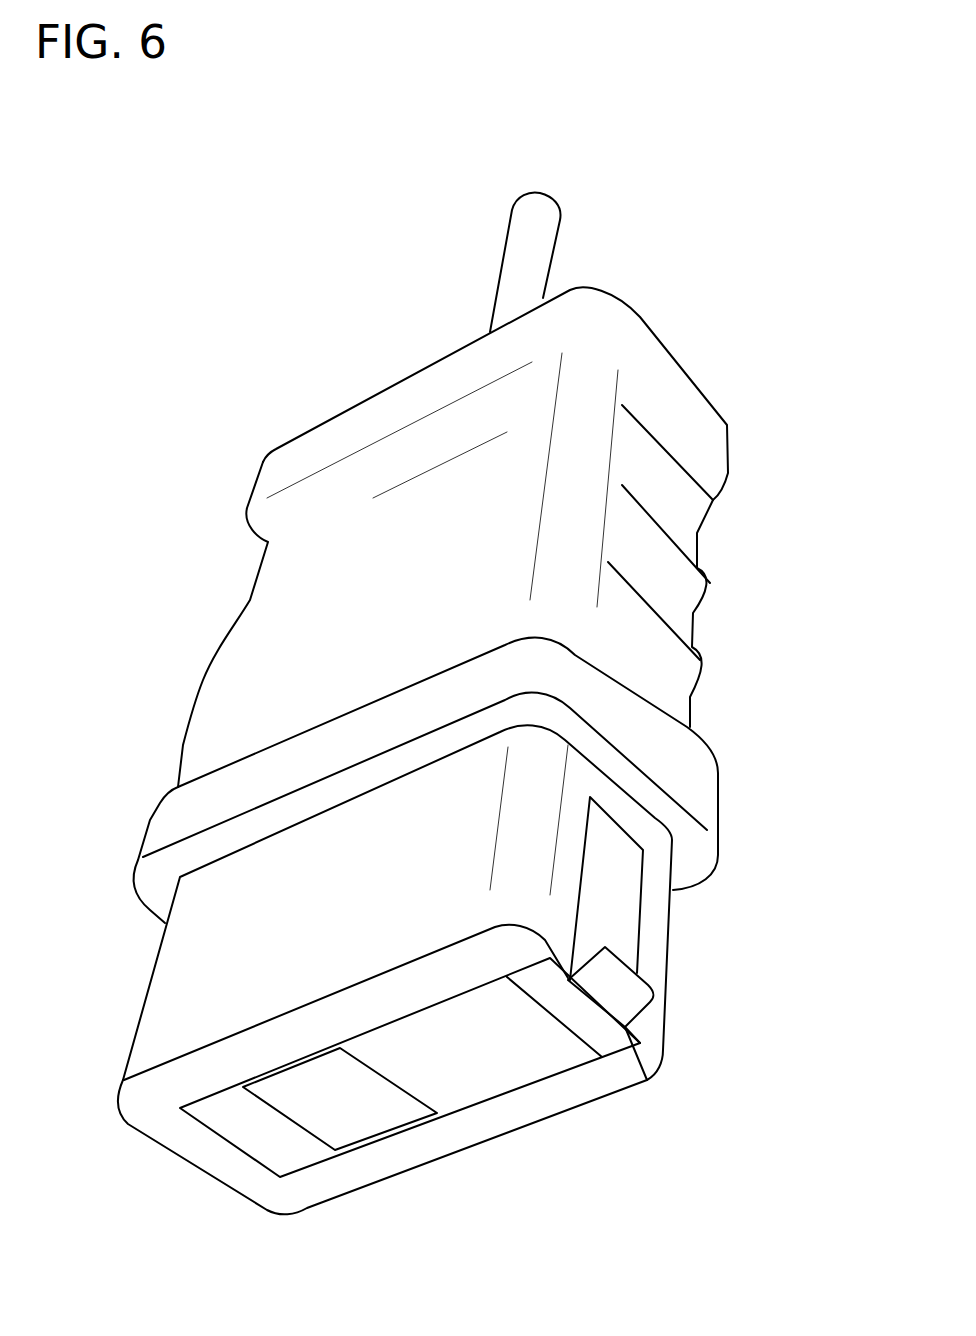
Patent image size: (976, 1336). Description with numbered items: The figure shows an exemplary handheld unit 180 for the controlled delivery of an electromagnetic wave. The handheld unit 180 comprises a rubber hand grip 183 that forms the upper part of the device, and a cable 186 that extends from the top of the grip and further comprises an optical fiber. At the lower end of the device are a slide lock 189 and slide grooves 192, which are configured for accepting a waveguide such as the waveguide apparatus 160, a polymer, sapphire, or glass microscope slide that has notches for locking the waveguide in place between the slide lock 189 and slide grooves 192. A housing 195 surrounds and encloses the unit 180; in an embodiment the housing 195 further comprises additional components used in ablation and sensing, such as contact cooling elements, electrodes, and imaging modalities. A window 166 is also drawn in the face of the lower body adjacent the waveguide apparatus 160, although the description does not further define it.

The handheld unit 180 is at (140, 226).
The rubber hand grip 183 is at (710, 583).
The cable 186 is at (545, 248).
The housing 195 is at (132, 971).
The waveguide apparatus 160 is at (470, 1076).
The window 166 is at (362, 1115).
The slide lock 189 is at (641, 978).
The slide grooves 192 is at (652, 1045).